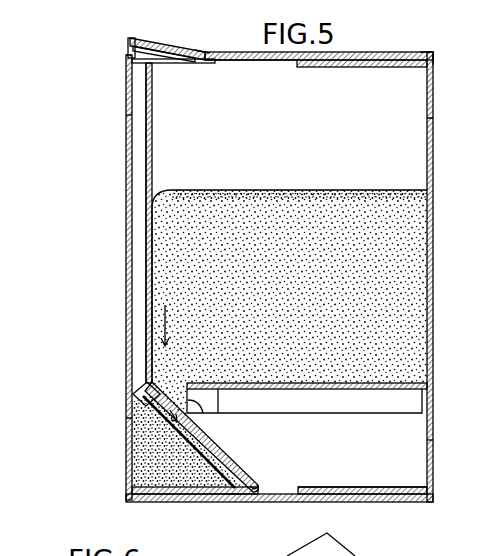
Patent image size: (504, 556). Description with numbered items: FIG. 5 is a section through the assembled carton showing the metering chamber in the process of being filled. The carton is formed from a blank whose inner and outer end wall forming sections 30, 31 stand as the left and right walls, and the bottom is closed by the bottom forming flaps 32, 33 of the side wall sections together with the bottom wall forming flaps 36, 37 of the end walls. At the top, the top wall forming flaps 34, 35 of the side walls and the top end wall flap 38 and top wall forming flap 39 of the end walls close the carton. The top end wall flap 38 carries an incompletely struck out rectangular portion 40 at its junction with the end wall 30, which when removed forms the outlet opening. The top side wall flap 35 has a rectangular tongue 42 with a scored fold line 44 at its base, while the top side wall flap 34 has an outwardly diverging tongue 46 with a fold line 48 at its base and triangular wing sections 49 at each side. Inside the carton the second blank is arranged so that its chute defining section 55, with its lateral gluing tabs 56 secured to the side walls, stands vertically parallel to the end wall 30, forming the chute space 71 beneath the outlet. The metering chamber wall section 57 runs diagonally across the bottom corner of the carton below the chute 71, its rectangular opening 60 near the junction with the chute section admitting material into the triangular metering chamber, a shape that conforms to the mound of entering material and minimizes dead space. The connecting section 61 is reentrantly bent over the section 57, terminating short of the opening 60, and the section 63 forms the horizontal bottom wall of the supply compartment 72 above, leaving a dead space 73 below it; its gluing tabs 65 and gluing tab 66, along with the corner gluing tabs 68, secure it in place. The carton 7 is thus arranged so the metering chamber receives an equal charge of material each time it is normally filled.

The container (partial) 7 is at (497, 221).
The inner end wall forming section 30 is at (128, 271).
The outer end wall forming section 31 is at (433, 296).
The bottom forming flap 32 is at (289, 502).
The bottom forming flap 33 is at (365, 487).
The top wall forming flap 34 is at (216, 52).
The top wall forming flap 35 is at (404, 52).
The bottom wall forming flap 36 is at (262, 490).
The bottom wall forming flap 37 is at (324, 487).
The top end wall flap 38 is at (243, 61).
The top wall forming flap 39 is at (387, 67).
The incompletely struck out rectangular portion 40 is at (129, 49).
The rectangular tongue 42 is at (172, 45).
The scored fold line 44 is at (183, 64).
The outwardly diverging tongue 46 is at (152, 42).
The fold line 48 is at (193, 51).
The triangular wing sections 49 is at (127, 62).
The chute defining section 55 is at (152, 118).
The lateral gluing tabs 56 is at (142, 143).
The metering chamber wall section 57 is at (258, 487).
The rectangular opening 60 is at (134, 395).
The connecting section 61 is at (232, 465).
The supply compartment bottom section 63 is at (416, 392).
The gluing tabs 65 is at (325, 405).
The gluing tab 66 is at (233, 496).
The corner gluing tabs 68 is at (206, 413).
The chute space 71 is at (130, 116).
The supply compartment 72 is at (434, 120).
The dead space 73 is at (432, 444).